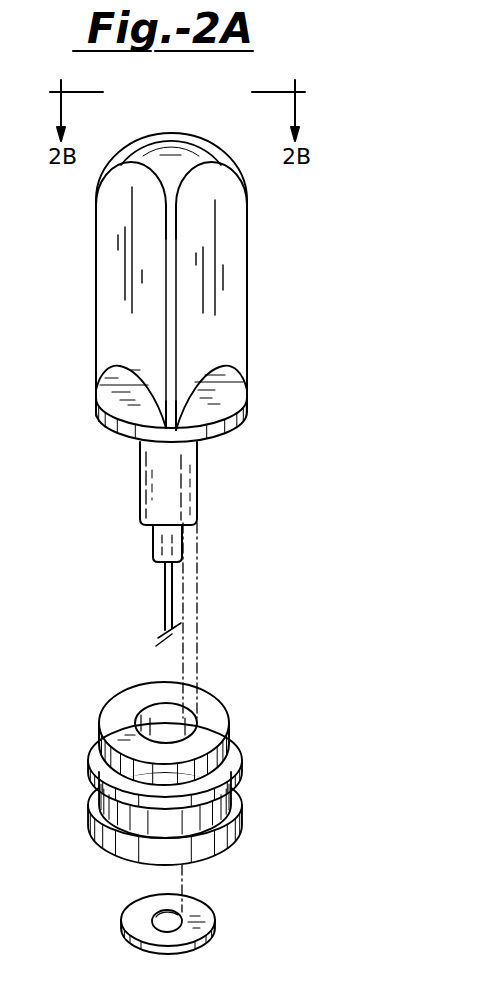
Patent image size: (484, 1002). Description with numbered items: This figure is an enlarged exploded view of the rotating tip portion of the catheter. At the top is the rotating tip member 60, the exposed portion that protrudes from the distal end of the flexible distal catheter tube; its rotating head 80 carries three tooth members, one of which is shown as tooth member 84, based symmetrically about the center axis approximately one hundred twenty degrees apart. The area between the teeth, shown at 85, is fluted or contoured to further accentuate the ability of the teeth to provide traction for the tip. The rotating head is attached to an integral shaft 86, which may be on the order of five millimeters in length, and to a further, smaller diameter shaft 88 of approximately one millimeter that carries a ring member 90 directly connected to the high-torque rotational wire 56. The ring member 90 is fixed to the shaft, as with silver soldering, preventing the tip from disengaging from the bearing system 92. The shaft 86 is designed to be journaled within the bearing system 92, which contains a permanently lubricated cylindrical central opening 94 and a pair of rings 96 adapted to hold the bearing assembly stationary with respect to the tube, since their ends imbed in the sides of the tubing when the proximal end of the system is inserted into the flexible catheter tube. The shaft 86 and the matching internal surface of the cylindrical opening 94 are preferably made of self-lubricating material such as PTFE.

The rotating tip member 60 is at (192, 117).
The handle 80 is at (96, 347).
The fluted area between the teeth 85 is at (117, 243).
The tooth member 84 is at (163, 292).
The integral shaft 86 is at (140, 482).
The smaller diameter shaft 88 is at (155, 545).
The high-torque rotational wire 56 is at (165, 617).
The bearing system 92 is at (228, 712).
The cylindrical central opening 94 is at (140, 716).
The rings 96 is at (247, 817).
The ring member 90 is at (215, 937).